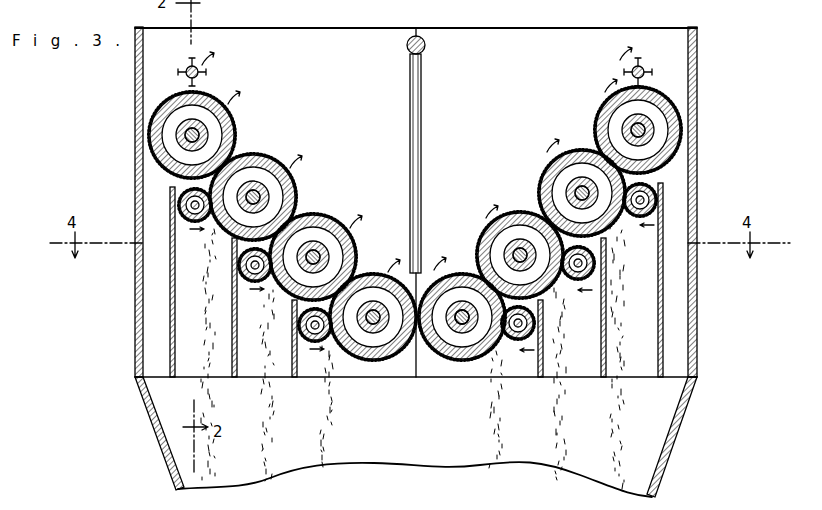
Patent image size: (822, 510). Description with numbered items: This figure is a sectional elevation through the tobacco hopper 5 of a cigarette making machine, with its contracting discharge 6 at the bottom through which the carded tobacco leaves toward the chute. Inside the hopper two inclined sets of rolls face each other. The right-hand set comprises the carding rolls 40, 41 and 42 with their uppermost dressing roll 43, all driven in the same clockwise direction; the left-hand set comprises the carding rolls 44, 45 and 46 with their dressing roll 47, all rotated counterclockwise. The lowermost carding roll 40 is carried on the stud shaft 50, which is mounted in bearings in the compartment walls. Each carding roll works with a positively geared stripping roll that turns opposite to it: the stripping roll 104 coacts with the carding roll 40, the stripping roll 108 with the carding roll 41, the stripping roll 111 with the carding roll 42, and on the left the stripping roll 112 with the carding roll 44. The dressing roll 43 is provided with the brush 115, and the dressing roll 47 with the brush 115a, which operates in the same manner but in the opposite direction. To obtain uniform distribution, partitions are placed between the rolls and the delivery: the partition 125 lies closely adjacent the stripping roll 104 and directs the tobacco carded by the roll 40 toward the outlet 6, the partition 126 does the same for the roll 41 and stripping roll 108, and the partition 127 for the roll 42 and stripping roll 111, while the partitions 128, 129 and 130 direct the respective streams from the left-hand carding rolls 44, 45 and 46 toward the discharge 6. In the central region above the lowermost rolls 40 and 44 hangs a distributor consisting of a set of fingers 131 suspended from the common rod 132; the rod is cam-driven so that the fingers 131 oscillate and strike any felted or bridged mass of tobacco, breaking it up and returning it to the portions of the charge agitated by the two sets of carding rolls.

The hopper 5 is at (310, 41).
The contracting discharge 6 is at (655, 440).
The carding roll 40 is at (459, 276).
The carding roll 41 is at (520, 212).
The carding roll 42 is at (573, 155).
The dressing roll 43 is at (618, 97).
The carding roll 44 is at (375, 276).
The carding roll 45 is at (354, 236).
The carding roll 46 is at (297, 188).
The dressing roll 47 is at (237, 128).
The stud shaft 50 is at (462, 335).
The stripping roll 104 is at (535, 325).
The stripping roll 108 is at (593, 266).
The stripping roll 111 is at (649, 198).
The stripping roll 112 is at (327, 338).
The brush 115 is at (641, 62).
The brush 115a is at (206, 70).
The partition 125 is at (545, 363).
The partition 126 is at (608, 345).
The partition 127 is at (699, 348).
The partition 128 is at (294, 362).
The partition 129 is at (234, 357).
The partition 130 is at (168, 347).
The fingers 131 is at (421, 130).
The common rod 132 is at (407, 49).